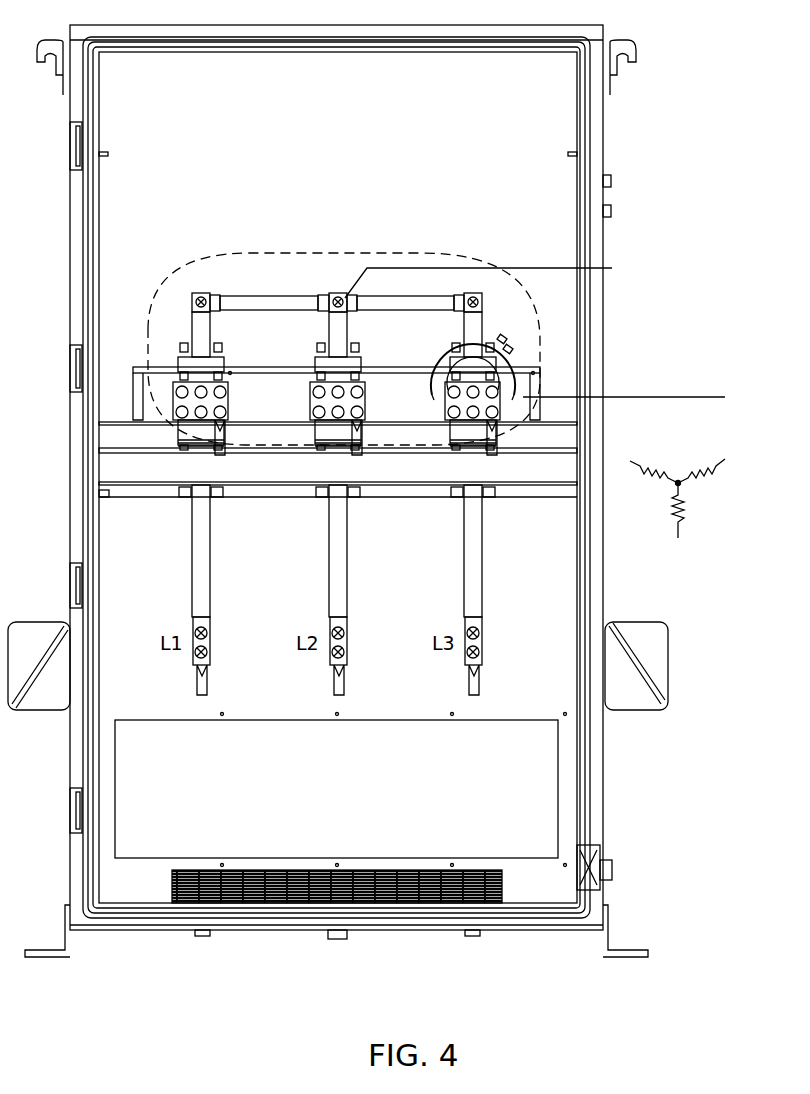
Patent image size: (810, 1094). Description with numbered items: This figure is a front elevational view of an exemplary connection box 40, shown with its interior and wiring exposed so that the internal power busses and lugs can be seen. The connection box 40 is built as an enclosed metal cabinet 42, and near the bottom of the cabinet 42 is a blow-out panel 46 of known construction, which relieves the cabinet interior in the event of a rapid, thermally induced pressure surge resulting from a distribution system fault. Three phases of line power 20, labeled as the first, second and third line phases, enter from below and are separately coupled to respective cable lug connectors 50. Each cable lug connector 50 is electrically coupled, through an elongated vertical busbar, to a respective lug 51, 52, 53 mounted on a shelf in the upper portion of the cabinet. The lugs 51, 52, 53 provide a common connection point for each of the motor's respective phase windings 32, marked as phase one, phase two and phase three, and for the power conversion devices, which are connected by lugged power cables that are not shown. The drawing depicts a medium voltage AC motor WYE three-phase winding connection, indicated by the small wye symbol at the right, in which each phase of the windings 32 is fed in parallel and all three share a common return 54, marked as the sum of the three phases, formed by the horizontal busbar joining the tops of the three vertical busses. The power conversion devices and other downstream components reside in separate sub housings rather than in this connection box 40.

The power line 20 is at (197, 688).
The motor windings 32 is at (617, 275).
The connection box 40 is at (50, 375).
The enclosed metal cabinet 42 is at (83, 882).
The blow-out panel 46 is at (398, 795).
The cable lug connectors 50 is at (210, 651).
The lug 51 is at (228, 390).
The lug 52 is at (366, 390).
The lug 53 is at (513, 375).
The common return 54 is at (195, 295).